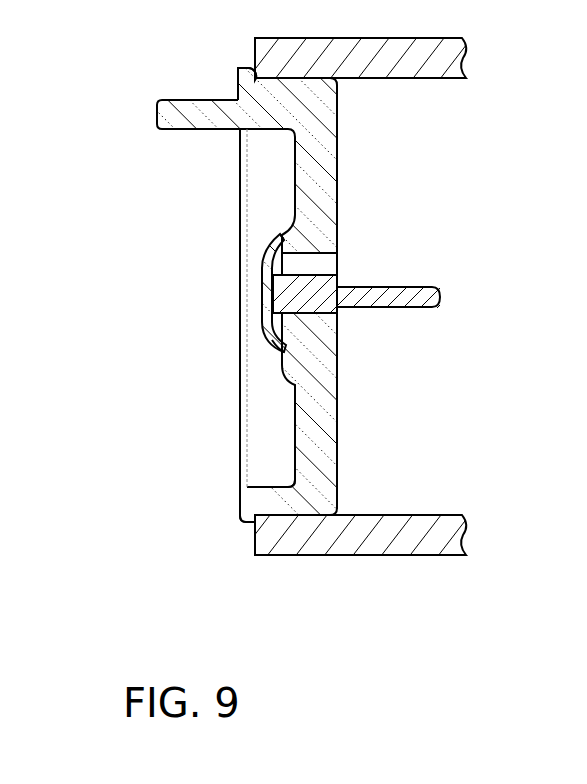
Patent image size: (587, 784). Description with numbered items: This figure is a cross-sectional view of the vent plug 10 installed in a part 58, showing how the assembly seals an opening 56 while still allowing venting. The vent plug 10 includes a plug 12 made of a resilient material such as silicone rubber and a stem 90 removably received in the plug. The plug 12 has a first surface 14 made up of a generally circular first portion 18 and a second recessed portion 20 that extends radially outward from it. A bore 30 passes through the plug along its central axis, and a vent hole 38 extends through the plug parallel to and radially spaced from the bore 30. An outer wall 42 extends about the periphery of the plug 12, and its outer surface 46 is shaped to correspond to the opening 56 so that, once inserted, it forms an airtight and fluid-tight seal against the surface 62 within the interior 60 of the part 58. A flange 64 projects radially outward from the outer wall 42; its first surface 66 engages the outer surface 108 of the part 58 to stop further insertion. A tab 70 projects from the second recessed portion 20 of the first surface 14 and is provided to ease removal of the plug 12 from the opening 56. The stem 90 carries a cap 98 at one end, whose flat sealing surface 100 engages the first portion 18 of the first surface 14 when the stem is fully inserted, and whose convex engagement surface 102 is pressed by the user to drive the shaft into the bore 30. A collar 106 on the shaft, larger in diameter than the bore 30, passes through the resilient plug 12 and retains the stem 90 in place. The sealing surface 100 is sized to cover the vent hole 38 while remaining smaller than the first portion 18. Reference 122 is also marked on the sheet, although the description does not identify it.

The vent plug 10 is at (176, 246).
The plug 12 is at (338, 140).
The first surface 14 is at (294, 420).
The first portion 18 is at (277, 236).
The second recessed portion 20 is at (272, 172).
The bore 30 is at (338, 315).
The vent hole 38 is at (333, 262).
The outer wall 42 is at (255, 496).
The outer surface 46 is at (298, 514).
The opening 56 is at (238, 92).
The part 58 is at (387, 556).
The interior 60 is at (418, 444).
The surface 62 is at (404, 514).
The flange 64 is at (240, 523).
The first surface 66 is at (254, 70).
The tab 70 is at (157, 103).
The stem 90 is at (444, 297).
The cap 98 is at (285, 247).
The sealing surface 100 is at (282, 346).
The engagement surface 102 is at (258, 292).
The collar 106 is at (345, 311).
The outer surface 108 is at (262, 544).
The sheet 122 is at (570, 666).